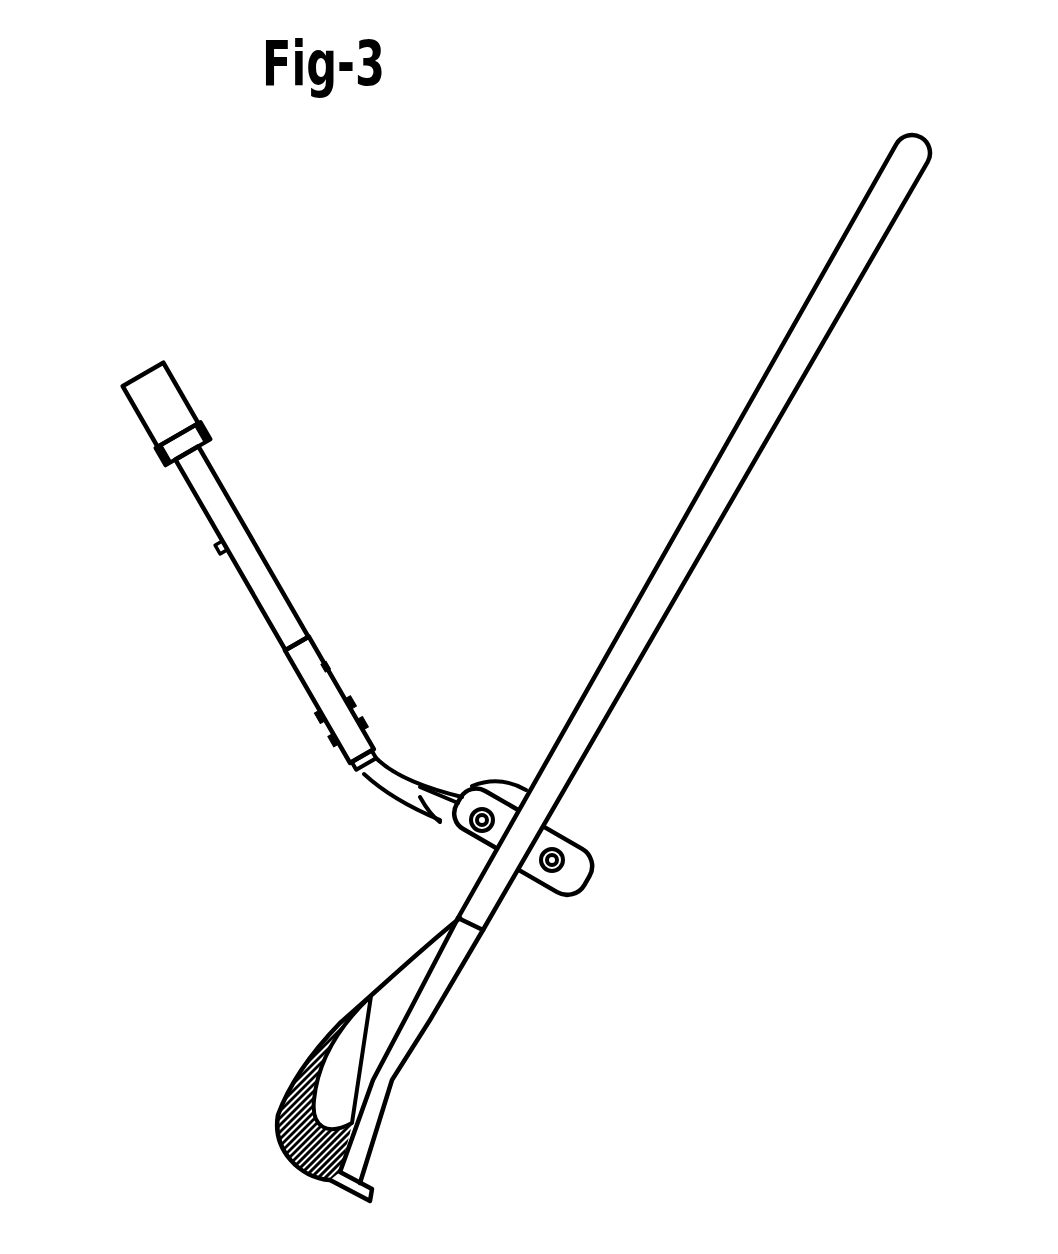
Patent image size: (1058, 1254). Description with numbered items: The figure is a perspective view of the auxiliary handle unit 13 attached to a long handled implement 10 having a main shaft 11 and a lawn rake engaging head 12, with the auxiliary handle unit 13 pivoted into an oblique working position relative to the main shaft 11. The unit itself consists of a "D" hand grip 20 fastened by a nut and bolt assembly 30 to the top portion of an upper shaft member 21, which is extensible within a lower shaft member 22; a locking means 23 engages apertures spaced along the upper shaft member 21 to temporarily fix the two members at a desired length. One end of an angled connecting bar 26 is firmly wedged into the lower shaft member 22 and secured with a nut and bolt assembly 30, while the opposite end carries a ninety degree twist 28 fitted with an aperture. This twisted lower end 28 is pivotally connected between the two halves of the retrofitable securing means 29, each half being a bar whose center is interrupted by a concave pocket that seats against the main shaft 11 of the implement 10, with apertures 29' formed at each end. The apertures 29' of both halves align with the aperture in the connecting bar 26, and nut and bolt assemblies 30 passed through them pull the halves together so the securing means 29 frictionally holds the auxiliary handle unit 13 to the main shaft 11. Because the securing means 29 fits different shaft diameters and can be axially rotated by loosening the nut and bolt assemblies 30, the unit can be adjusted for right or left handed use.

The golf club 10 is at (270, 392).
The main shaft 11 is at (675, 572).
The engaging head 12 is at (377, 1155).
The auxiliary handle unit 13 is at (137, 478).
The "D" hand grip 20 is at (134, 373).
The upper shaft member 21 is at (232, 509).
The lower shaft member 22 is at (322, 670).
The locking means 23 is at (219, 558).
The angled connecting bar 26 is at (390, 800).
The 90 degree twist 28 is at (446, 826).
The retrofitable securing means 29 is at (548, 907).
The apertures 29' is at (552, 797).
The nut and bolt assembly 30 is at (218, 428).